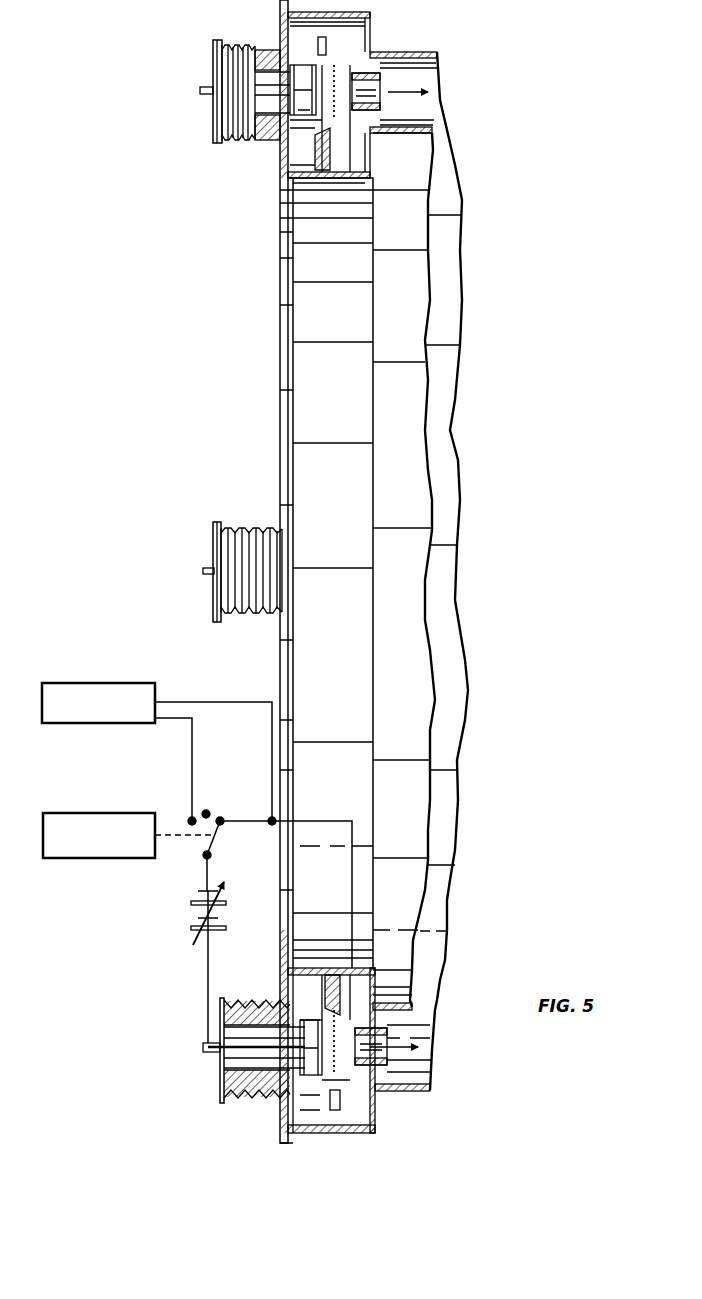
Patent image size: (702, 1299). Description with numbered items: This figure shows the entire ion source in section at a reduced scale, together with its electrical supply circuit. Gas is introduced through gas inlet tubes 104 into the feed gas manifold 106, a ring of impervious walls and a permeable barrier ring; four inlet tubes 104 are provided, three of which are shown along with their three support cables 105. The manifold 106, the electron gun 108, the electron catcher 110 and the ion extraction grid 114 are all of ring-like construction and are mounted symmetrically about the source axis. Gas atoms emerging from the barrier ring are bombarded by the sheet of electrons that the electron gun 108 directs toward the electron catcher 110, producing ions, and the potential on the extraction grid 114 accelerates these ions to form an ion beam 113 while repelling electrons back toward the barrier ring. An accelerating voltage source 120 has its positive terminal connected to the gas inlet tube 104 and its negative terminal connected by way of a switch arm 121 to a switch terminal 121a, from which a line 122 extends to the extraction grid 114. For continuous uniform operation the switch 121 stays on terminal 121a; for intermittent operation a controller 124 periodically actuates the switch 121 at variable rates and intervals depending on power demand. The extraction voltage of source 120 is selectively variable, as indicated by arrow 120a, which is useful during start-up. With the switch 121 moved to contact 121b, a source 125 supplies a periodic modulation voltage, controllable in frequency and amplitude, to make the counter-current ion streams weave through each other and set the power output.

The gas inlet tube 104 is at (204, 93).
The support cable 105 is at (249, 140).
The feed gas manifold 106 is at (301, 66).
The electron gun 108 is at (330, 46).
The electron catcher 110 is at (318, 153).
The ion beam 113 is at (422, 80).
The ion extraction grid 114 is at (340, 66).
The accelerating voltage source 120 is at (193, 914).
The arrow 120a is at (192, 938).
The switch arm 121 is at (213, 840).
The switch terminal 121a is at (220, 818).
The contact 121b is at (190, 820).
The line 122 is at (272, 819).
The controller 124 is at (62, 822).
The modulation voltage source 125 is at (116, 692).